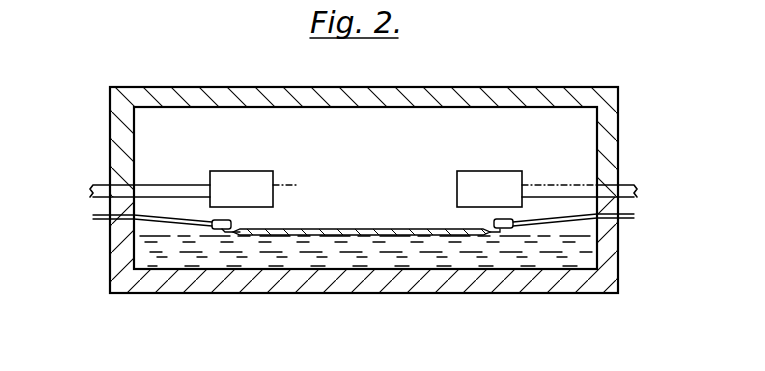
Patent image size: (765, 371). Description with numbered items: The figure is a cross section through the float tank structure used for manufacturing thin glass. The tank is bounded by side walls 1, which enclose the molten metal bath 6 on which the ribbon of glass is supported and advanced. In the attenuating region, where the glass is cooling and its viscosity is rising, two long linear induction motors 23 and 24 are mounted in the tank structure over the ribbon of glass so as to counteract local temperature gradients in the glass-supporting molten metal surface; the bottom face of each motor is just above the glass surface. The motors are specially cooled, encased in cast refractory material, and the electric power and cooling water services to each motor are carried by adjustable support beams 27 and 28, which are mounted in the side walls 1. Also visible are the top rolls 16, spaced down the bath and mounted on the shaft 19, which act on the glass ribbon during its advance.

The side walls 1 is at (123, 251).
The molten metal bath 6 is at (172, 258).
The top rolls 16 is at (235, 226).
The shaft 19 is at (105, 218).
The linear induction motor 23 is at (499, 183).
The linear induction motor 24 is at (240, 186).
The adjustable support beam 27 is at (622, 186).
The adjustable support beam 28 is at (104, 186).